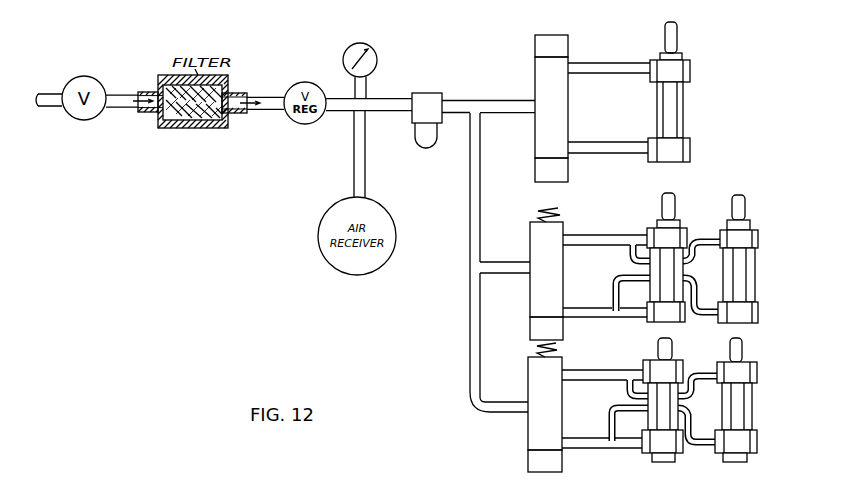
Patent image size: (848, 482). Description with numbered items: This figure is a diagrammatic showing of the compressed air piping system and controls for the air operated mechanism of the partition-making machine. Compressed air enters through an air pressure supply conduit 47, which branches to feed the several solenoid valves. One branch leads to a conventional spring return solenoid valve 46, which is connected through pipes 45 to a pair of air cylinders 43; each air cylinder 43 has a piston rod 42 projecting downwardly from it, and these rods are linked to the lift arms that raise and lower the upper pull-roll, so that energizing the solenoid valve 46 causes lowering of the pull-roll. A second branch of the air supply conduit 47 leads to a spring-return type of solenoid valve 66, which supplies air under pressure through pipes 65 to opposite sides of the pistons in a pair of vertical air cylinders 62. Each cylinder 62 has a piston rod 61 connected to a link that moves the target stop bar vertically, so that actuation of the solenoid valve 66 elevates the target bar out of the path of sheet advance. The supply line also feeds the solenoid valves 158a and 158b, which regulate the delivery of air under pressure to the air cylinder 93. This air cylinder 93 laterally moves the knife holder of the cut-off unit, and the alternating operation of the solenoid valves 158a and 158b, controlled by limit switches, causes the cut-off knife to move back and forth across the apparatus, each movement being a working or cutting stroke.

The solenoid valve 158a is at (537, 53).
The solenoid valve 158b is at (545, 175).
The air cylinder 93 is at (663, 108).
The piston rod 42 is at (663, 205).
The air cylinder 43 is at (681, 252).
The pipes 45 is at (588, 308).
The spring return solenoid valve 46 is at (534, 304).
The air pressure supply conduit 47 is at (470, 352).
The piston rod 61 is at (672, 350).
The air cylinder 62 is at (682, 391).
The pipes 65 is at (580, 438).
The spring-return solenoid valve 66 is at (531, 436).